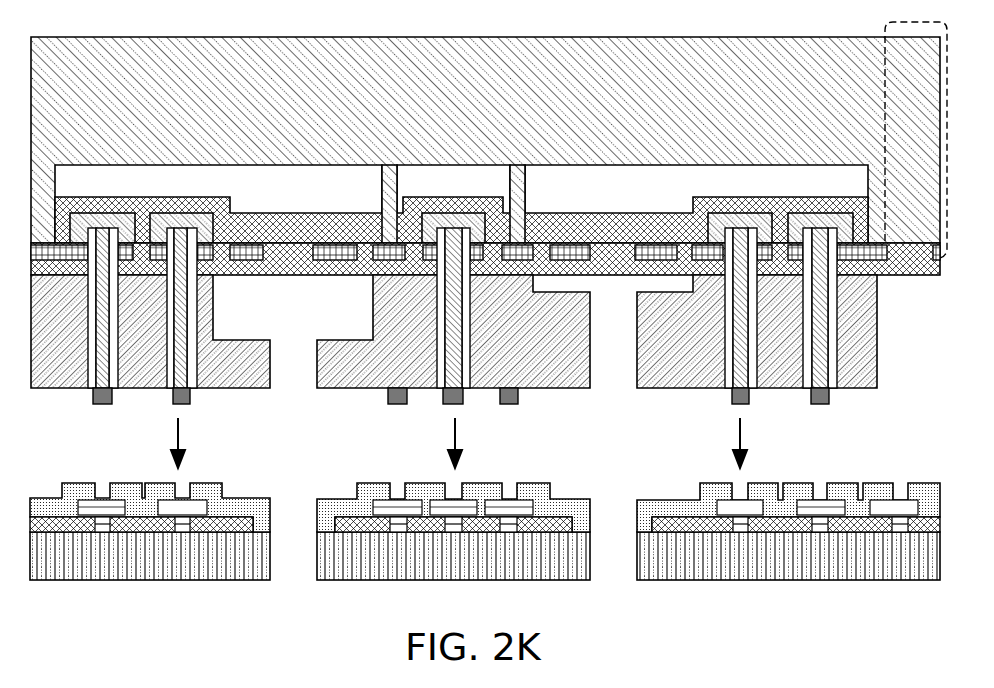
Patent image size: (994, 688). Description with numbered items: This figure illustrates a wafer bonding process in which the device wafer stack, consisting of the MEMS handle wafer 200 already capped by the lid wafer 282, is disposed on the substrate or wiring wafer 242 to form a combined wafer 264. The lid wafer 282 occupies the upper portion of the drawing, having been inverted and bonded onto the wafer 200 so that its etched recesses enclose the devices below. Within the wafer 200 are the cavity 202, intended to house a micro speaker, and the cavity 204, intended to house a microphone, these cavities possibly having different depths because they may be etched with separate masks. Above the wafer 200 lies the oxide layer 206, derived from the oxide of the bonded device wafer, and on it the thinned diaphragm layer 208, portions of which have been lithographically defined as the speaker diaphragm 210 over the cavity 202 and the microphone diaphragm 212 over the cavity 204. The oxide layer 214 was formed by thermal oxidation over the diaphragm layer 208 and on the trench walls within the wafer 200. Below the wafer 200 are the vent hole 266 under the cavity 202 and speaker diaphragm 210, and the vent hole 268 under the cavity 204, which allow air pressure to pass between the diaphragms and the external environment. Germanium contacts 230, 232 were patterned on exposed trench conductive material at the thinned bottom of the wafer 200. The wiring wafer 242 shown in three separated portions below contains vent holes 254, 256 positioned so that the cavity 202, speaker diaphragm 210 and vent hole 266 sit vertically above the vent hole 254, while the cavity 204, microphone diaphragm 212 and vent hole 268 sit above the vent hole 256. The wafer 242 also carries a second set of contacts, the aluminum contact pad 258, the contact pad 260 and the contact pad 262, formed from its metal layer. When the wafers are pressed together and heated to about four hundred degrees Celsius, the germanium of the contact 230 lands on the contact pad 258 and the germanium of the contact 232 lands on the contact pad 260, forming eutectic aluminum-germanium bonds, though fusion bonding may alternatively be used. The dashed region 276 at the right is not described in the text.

The MEMS handle wafer 200 is at (703, 350).
The cavity 202 is at (312, 315).
The cavity 204 is at (629, 295).
The oxide layer 206 is at (485, 260).
The diaphragm layer 208 is at (485, 253).
The speaker diaphragm 210 is at (317, 253).
The microphone diaphragm 212 is at (613, 253).
The oxide layer 214 is at (461, 219).
The contact 230 is at (173, 392).
The contact 232 is at (732, 392).
The substrate wafer 242 is at (919, 566).
The vent hole 254 is at (196, 553).
The vent hole 256 is at (610, 588).
The contact pad 258 is at (182, 509).
The contact pad 260 is at (740, 509).
The contact pad 262 is at (894, 509).
The combined wafer 264 is at (788, 553).
The vent hole 266 is at (294, 388).
The vent hole 268 is at (623, 377).
The sidewall region 276 is at (885, 32).
The lid wafer 282 is at (704, 111).